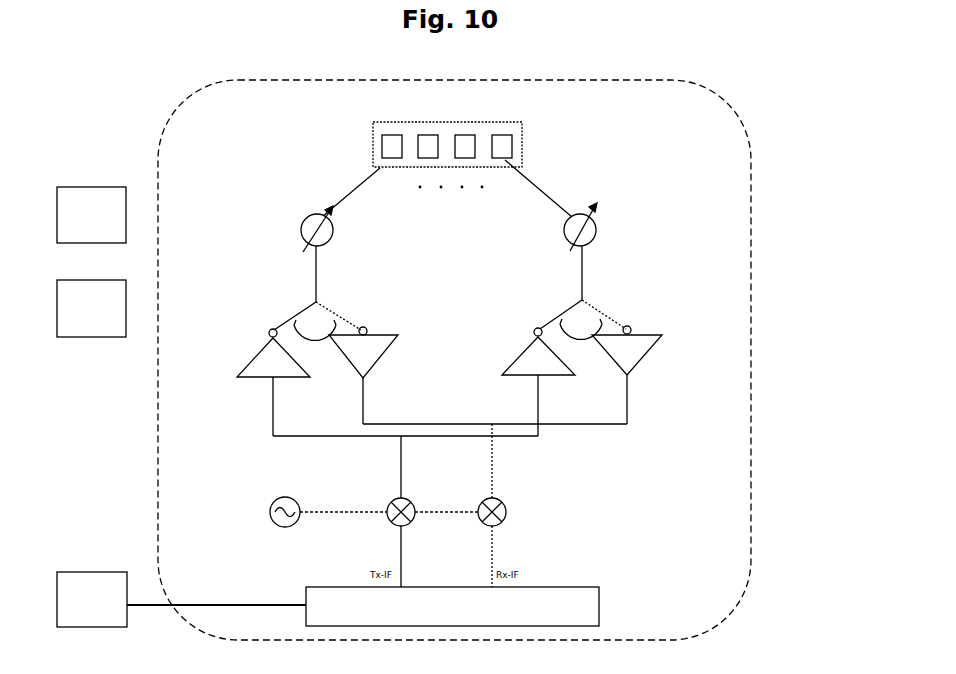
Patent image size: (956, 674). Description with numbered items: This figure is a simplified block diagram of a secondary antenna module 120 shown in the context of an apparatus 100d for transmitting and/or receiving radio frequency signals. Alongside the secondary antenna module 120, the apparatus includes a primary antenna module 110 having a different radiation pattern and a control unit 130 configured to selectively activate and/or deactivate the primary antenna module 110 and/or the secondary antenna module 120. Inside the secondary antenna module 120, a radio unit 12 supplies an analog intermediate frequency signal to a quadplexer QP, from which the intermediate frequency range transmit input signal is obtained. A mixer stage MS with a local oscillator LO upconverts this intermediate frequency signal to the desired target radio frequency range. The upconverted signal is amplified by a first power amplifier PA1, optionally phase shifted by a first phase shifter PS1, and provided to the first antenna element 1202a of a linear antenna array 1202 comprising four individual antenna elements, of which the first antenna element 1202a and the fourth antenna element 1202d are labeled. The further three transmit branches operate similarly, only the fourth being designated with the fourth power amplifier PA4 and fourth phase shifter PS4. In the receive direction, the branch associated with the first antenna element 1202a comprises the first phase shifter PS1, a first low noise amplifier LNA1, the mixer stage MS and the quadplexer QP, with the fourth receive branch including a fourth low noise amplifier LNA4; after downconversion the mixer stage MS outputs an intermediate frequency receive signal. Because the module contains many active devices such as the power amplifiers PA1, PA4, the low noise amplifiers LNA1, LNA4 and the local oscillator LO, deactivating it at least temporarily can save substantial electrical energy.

The apparatus 100d is at (135, 133).
The secondary antenna module 120 is at (751, 180).
The control unit 130 is at (77, 223).
The primary antenna module 110 is at (77, 317).
The radio unit 12 is at (82, 609).
The linear antenna array 1202 is at (440, 137).
The first antenna element 1202a is at (372, 136).
The fourth antenna element 1202d is at (513, 137).
The first phase shifter PS1 is at (300, 224).
The fourth phase shifter PS4 is at (597, 227).
The first power amplifier PA1 is at (250, 358).
The fourth power amplifier PA4 is at (516, 360).
The first low noise amplifier LNA1 is at (378, 360).
The fourth low noise amplifier LNA4 is at (658, 342).
The mixer stage MS is at (363, 493).
The local oscillator LO is at (309, 512).
The quadplexer QP is at (305, 592).